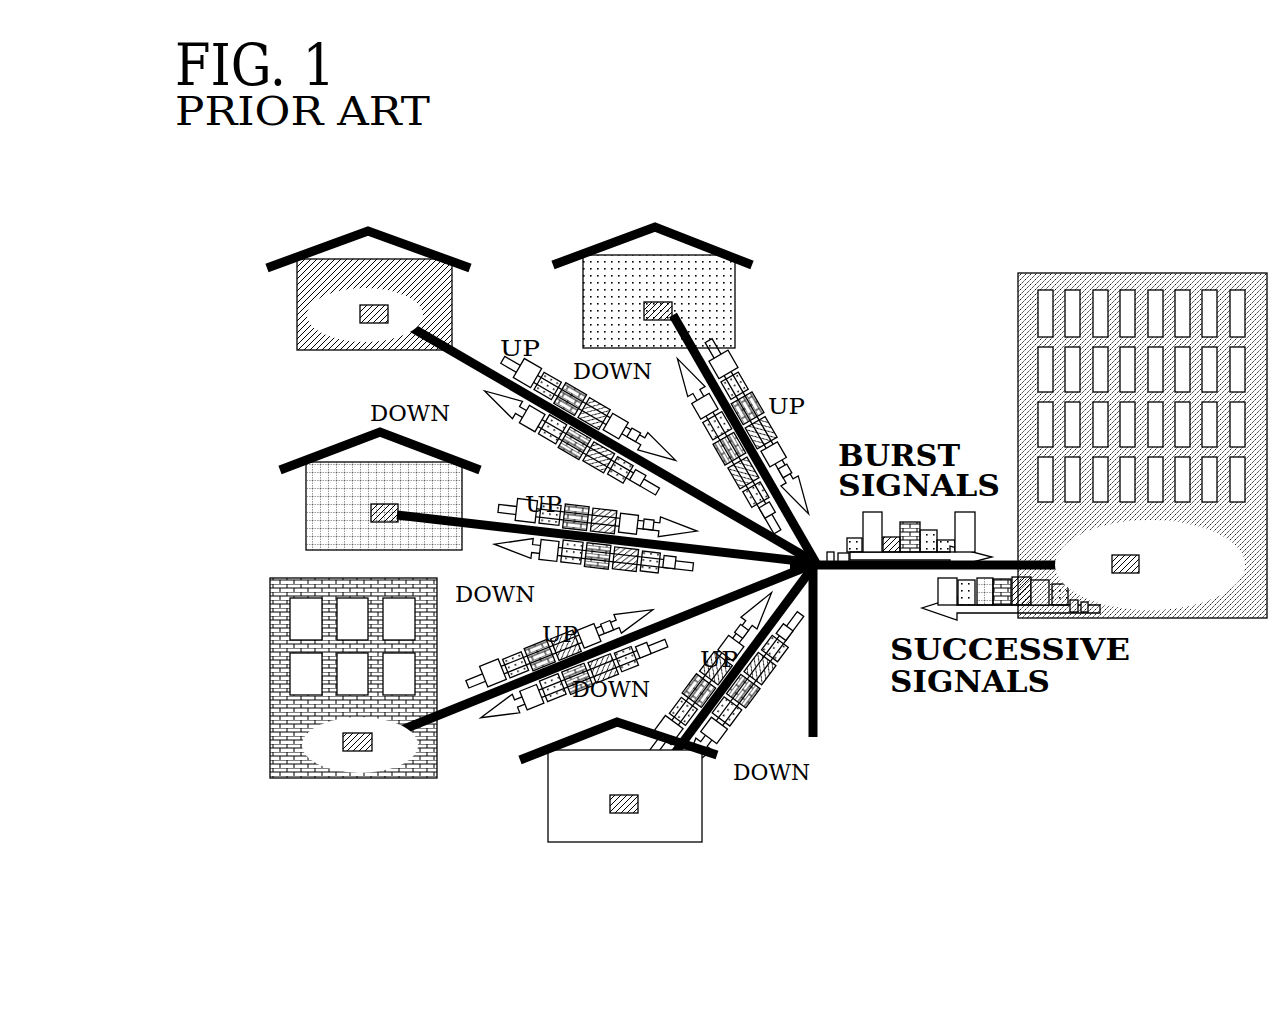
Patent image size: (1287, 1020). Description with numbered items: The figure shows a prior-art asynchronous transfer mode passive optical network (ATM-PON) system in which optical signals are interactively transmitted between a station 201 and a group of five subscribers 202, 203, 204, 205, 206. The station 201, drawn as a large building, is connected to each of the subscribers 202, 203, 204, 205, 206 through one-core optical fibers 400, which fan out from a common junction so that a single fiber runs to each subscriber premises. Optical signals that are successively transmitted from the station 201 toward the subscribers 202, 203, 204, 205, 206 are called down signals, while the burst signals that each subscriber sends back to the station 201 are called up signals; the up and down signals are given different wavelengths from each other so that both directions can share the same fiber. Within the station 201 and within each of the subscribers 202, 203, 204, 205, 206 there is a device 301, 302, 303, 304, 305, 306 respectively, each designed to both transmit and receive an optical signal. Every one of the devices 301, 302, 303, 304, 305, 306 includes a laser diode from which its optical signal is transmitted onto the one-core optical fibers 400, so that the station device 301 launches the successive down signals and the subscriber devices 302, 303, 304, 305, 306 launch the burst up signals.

The station 201 is at (1163, 272).
The subscriber 202 is at (707, 242).
The subscriber 203 is at (406, 245).
The subscriber 204 is at (310, 455).
The subscriber 205 is at (270, 613).
The subscriber 206 is at (650, 842).
The device 301 is at (1133, 573).
The device 302 is at (672, 307).
The device 303 is at (388, 310).
The device 304 is at (372, 511).
The device 305 is at (343, 749).
The device 306 is at (610, 812).
The one-core optical fibers 400 is at (890, 570).